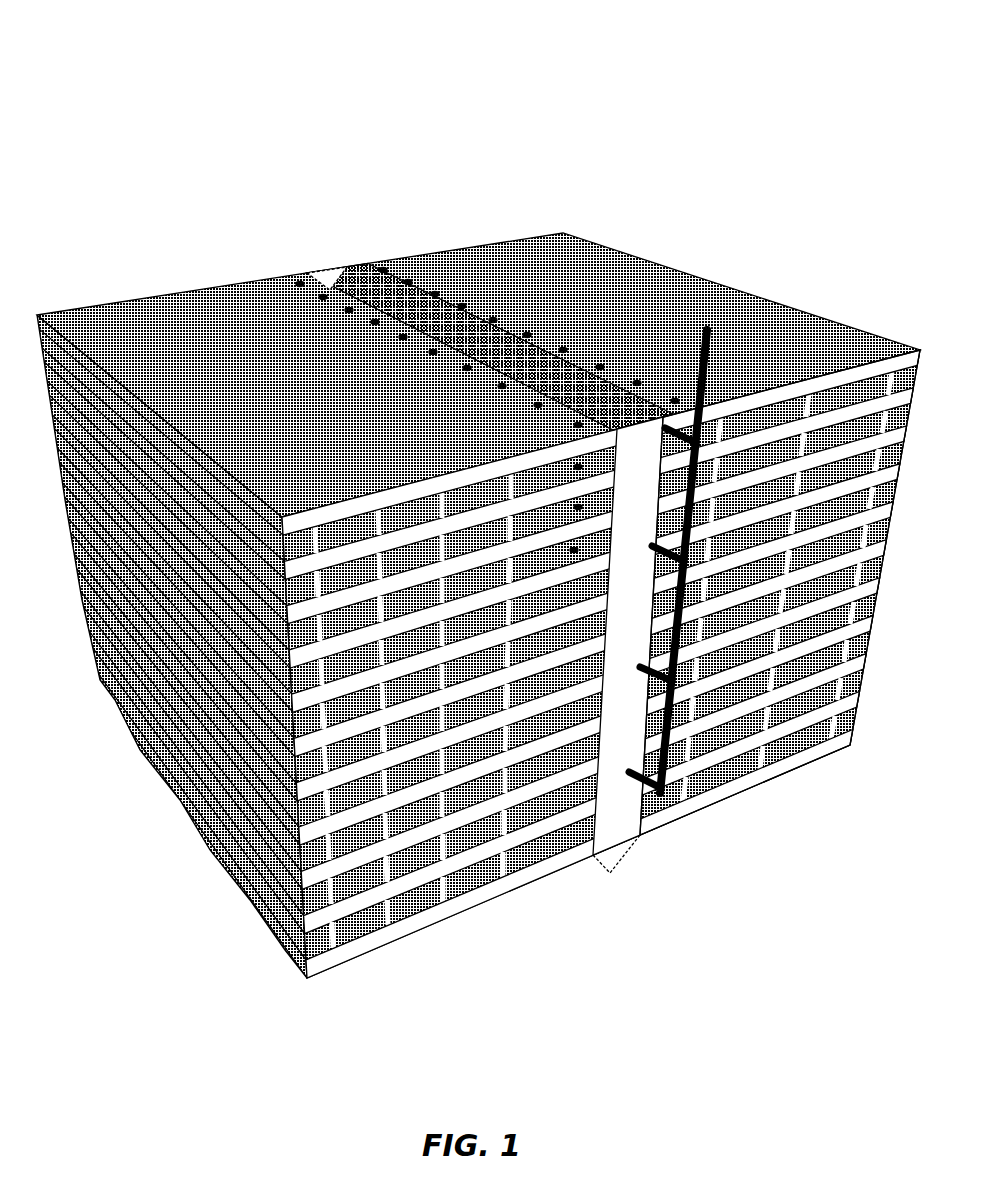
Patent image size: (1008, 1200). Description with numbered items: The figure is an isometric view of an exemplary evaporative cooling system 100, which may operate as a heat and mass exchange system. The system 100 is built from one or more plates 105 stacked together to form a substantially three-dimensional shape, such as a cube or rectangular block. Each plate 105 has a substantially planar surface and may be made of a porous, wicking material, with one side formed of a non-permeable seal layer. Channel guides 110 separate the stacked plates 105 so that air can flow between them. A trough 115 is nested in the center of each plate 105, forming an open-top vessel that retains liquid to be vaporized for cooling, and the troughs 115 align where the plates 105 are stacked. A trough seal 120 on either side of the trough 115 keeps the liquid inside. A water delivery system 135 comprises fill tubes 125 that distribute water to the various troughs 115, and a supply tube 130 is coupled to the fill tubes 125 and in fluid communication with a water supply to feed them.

The evaporative cooling system 100 is at (460, 528).
The plate 105 is at (473, 349).
The channel guide 110 is at (395, 932).
The trough 115 is at (356, 284).
The trough seal 120 is at (603, 862).
The fill tube 125 is at (640, 798).
The supply tube 130 is at (708, 322).
The water delivery system 135 is at (712, 644).